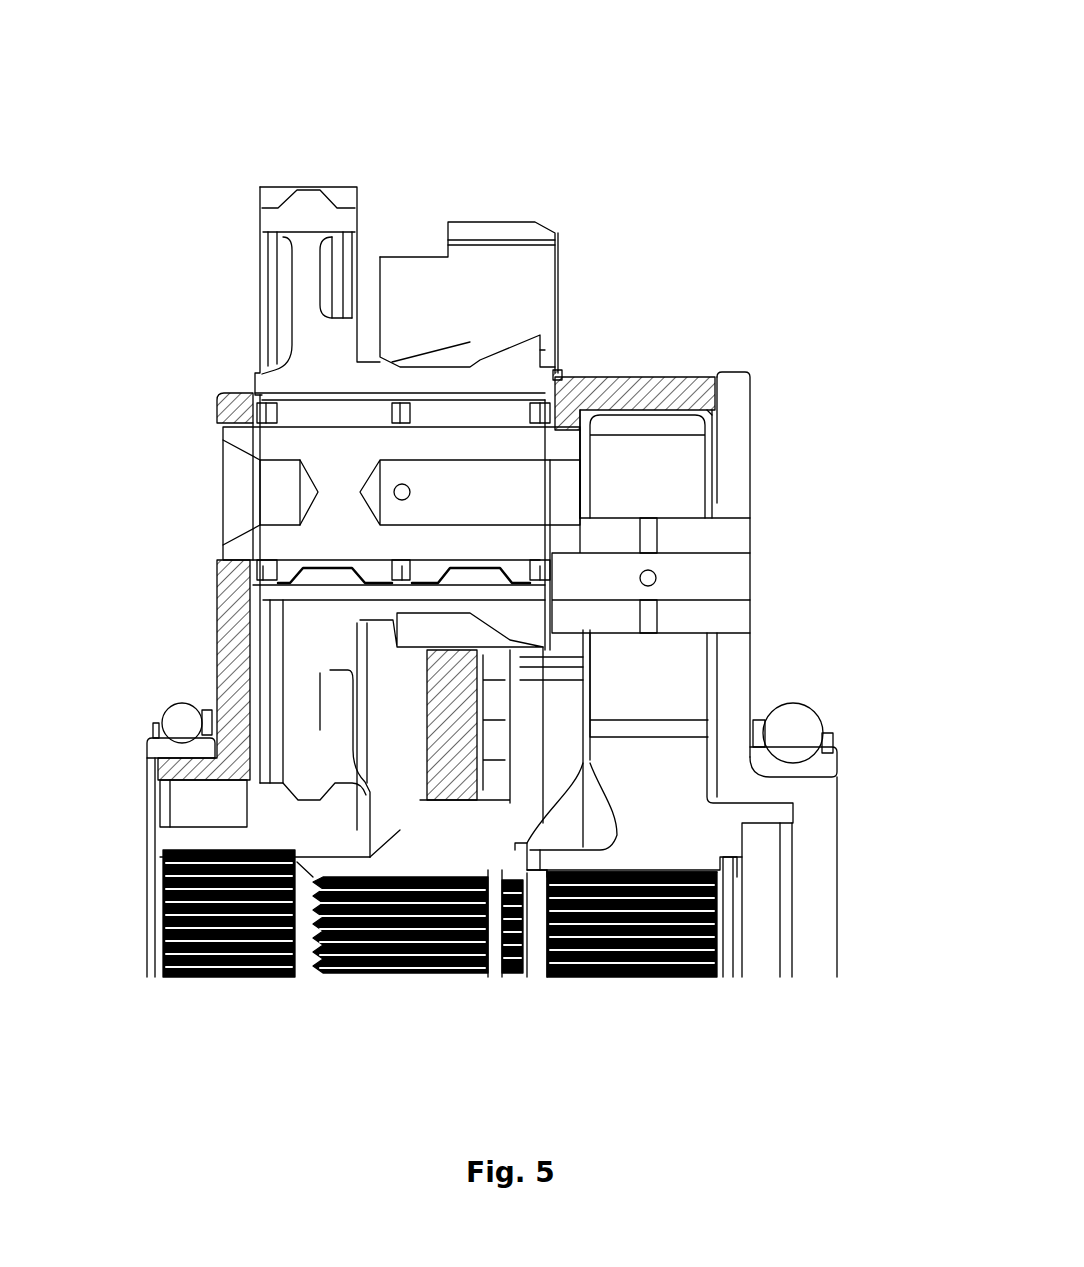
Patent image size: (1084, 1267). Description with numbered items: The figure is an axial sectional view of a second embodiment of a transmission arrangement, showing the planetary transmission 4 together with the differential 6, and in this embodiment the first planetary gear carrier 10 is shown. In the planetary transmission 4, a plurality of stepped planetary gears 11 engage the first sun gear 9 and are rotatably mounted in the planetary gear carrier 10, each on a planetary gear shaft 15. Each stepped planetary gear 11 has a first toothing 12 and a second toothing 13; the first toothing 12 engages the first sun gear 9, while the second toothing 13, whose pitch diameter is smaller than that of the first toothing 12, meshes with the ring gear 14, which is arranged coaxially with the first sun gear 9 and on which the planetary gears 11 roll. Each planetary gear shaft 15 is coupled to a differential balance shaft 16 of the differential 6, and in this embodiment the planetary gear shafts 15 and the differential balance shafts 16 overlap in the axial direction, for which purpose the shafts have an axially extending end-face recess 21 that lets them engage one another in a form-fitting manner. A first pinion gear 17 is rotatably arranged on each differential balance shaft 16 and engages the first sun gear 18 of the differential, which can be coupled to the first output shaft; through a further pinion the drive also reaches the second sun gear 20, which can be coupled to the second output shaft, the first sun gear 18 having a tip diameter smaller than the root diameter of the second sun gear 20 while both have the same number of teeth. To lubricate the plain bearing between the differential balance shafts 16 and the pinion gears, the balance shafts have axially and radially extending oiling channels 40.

The planetary transmission 4 is at (345, 163).
The differential 6 is at (683, 290).
The first sun gear 9 is at (195, 845).
The first planetary gear carrier 10 is at (215, 655).
The stepped planetary gears 11 is at (305, 315).
The first toothing 12 is at (278, 192).
The second toothing 13 is at (512, 338).
The ring gear 14 is at (459, 308).
The planetary gear shaft 15 is at (330, 497).
The differential balance shaft 16 is at (730, 533).
The first pinion gear 17 is at (698, 360).
The first sun gear 18 is at (665, 820).
The second sun gear 20 is at (468, 847).
The end-face recess 21 is at (598, 350).
The oiling channels 40 is at (660, 610).